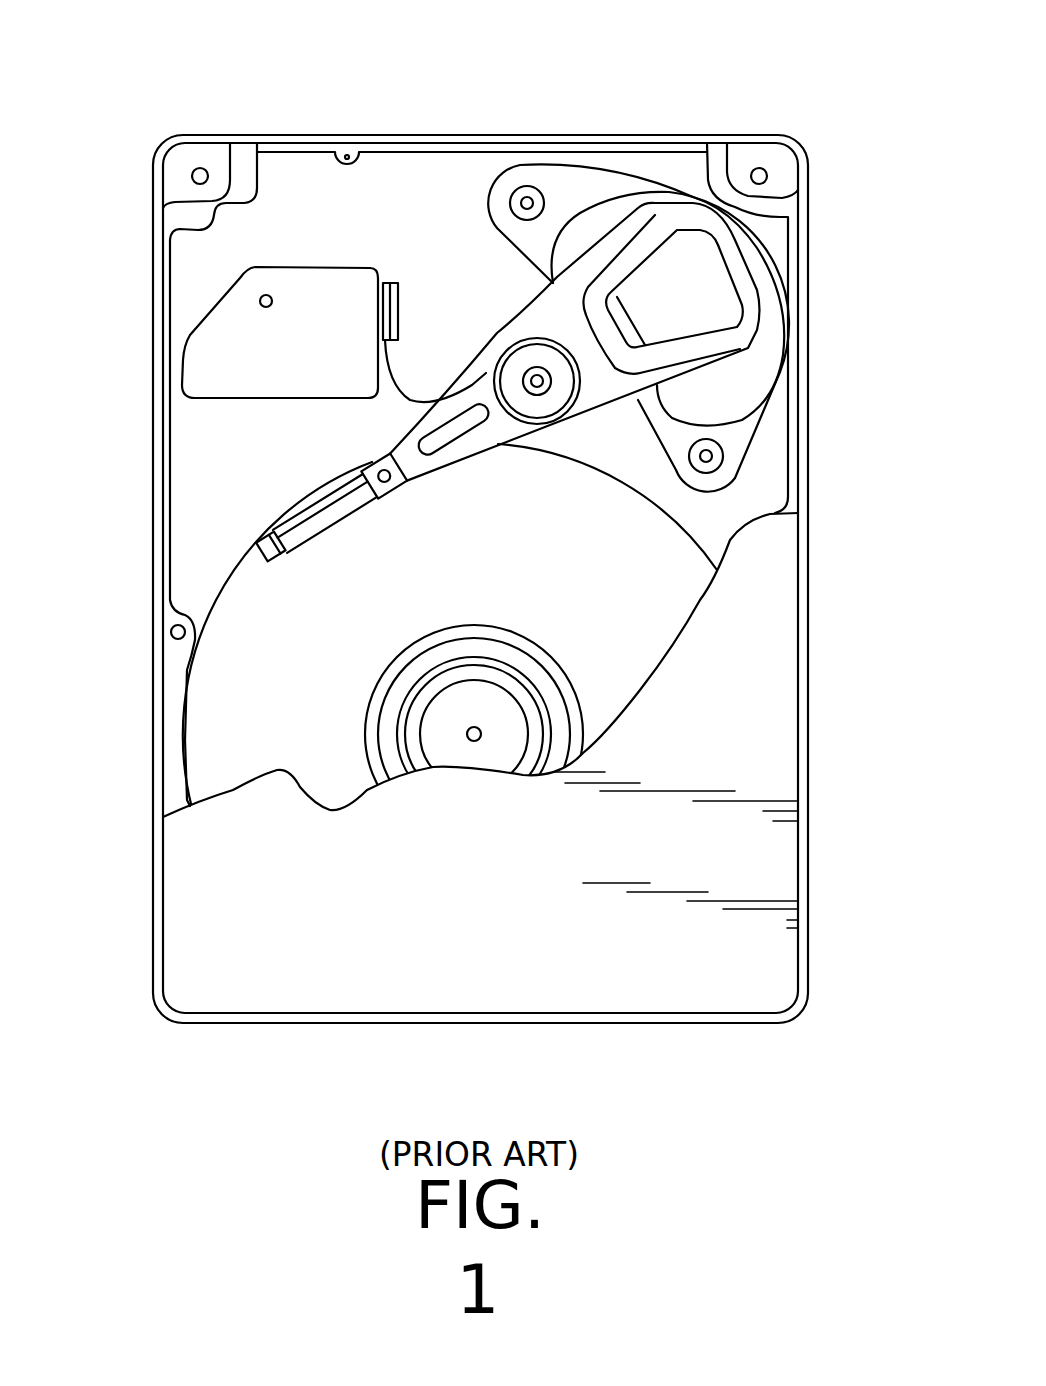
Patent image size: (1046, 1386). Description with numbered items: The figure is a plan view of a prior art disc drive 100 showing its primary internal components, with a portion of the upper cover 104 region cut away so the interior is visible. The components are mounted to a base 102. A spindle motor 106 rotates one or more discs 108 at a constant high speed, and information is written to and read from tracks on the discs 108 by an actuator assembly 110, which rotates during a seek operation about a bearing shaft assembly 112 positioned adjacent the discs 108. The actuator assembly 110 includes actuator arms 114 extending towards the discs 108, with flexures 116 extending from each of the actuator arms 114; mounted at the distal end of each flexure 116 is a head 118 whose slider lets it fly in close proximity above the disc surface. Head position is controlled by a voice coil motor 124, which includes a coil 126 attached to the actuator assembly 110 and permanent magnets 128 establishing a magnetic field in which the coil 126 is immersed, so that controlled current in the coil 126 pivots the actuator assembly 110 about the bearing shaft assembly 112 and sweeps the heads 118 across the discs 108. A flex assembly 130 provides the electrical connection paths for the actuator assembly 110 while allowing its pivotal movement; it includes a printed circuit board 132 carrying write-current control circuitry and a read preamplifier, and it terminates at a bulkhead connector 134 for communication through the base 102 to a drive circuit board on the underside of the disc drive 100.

The disc drive 100 is at (200, 85).
The base 102 is at (240, 522).
The cover 104 is at (775, 852).
The spindle motor 106 is at (474, 742).
The disc 108 is at (307, 773).
The actuator assembly 110 is at (527, 457).
The bearing shaft assembly 112 is at (540, 382).
The actuator arm 114 is at (472, 460).
The flexure 116 is at (322, 515).
The head 118 is at (260, 553).
The voice coil motor 124 is at (589, 150).
The coil 126 is at (742, 283).
The permanent magnet 128 is at (573, 237).
The flex assembly 130 is at (440, 393).
The printed circuit board 132 is at (486, 328).
The bulkhead connector 134 is at (253, 383).